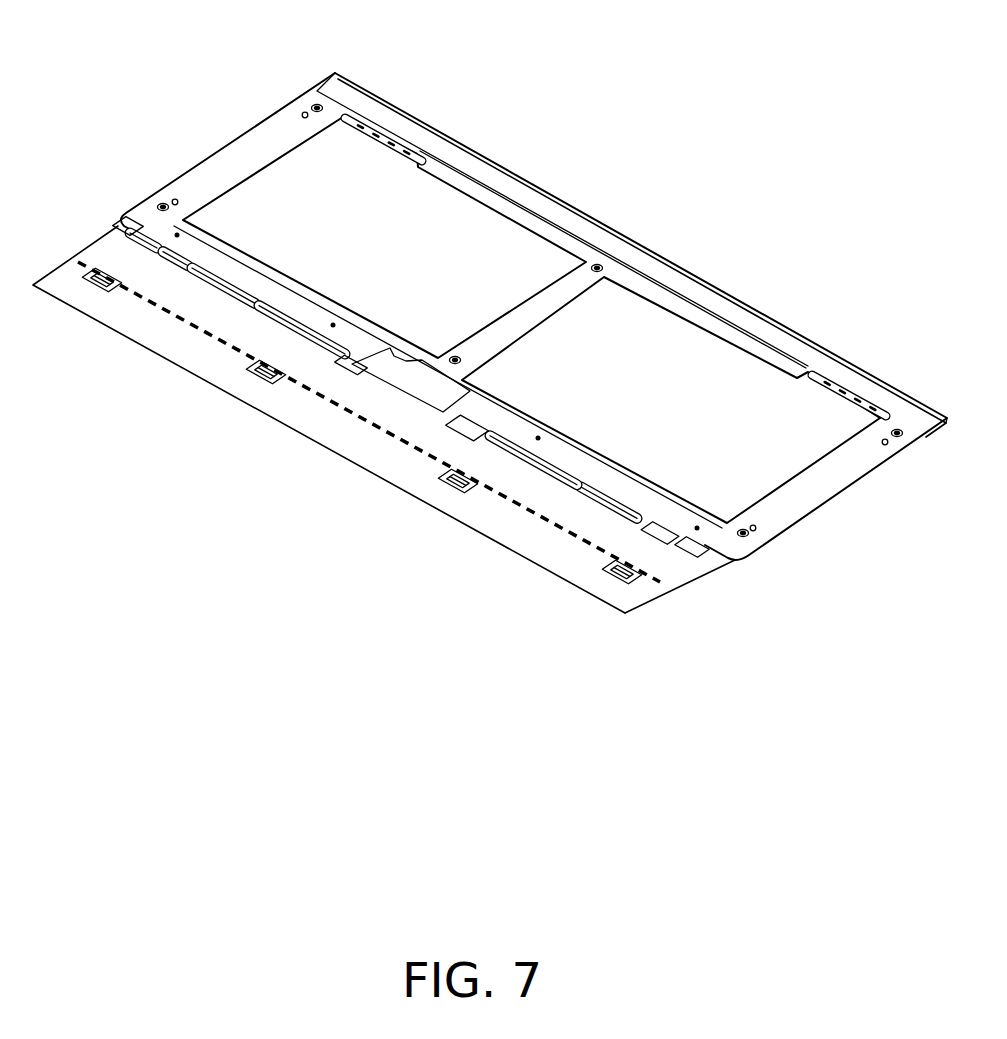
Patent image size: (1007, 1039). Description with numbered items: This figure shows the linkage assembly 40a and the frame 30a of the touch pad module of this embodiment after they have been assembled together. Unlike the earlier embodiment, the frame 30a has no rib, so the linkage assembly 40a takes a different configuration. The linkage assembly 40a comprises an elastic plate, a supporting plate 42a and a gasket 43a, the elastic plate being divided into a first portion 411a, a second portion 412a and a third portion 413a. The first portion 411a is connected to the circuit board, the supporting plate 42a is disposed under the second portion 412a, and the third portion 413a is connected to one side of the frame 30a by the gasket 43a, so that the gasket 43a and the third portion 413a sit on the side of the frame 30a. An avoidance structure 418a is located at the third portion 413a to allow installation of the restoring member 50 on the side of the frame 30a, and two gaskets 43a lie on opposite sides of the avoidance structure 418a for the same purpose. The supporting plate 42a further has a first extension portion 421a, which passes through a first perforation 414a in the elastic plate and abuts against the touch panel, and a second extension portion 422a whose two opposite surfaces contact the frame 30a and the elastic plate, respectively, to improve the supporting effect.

The frame 30a is at (245, 148).
The linkage assembly 40a is at (404, 394).
The first portion 411a is at (455, 508).
The second portion 412a is at (98, 258).
The third portion 413a is at (647, 505).
The first perforation 414a is at (257, 368).
The avoidance structure 418a is at (512, 406).
The first extension portion 421a is at (270, 382).
The second extension portion 422a is at (142, 230).
The supporting plate 42a is at (678, 588).
The gasket 43a is at (740, 567).
The restoring member 50 is at (423, 382).